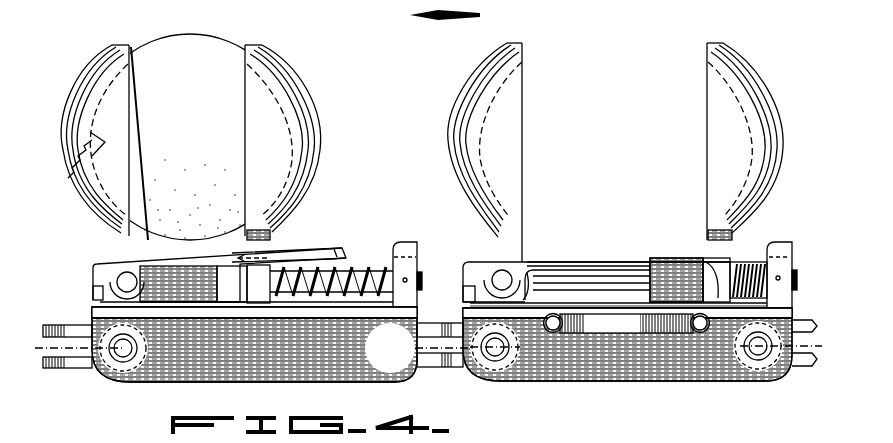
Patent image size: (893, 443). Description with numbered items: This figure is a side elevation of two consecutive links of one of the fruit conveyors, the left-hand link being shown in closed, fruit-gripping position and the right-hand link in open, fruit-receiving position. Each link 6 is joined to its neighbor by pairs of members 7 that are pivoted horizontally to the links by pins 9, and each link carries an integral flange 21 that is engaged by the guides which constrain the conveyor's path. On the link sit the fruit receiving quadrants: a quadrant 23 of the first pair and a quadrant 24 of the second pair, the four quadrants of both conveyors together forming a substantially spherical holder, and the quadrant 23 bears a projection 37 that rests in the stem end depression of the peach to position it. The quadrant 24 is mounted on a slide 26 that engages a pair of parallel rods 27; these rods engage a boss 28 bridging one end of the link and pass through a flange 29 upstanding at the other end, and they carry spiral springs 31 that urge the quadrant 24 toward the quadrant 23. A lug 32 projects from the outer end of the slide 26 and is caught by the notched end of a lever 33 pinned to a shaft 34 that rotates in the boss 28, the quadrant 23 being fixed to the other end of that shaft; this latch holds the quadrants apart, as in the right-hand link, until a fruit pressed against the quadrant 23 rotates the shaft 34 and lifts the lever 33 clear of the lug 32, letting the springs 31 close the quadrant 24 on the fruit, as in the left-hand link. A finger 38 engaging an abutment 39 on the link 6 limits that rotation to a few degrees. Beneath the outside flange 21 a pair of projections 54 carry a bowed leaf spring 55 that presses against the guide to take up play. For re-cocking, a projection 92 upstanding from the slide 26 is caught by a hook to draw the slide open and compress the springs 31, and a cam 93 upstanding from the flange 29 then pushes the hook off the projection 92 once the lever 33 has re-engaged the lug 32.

The link 6 is at (315, 370).
The member 7 is at (443, 369).
The pin 9 is at (122, 356).
The flange 21 is at (462, 306).
The quadrant 23 is at (104, 202).
The quadrant 24 is at (283, 212).
The slide 26 is at (223, 292).
The rod 27 is at (373, 266).
The boss 28 is at (538, 290).
The flange 29 is at (413, 262).
The spiral spring 31 is at (349, 264).
The lug 32 is at (261, 290).
The lever 33 is at (323, 256).
The shaft 34 is at (120, 275).
The projection 37 is at (68, 178).
The finger 38 is at (97, 272).
The abutment 39 is at (95, 293).
The projection 54 is at (555, 334).
The leaf spring 55 is at (614, 328).
The projection 92 is at (271, 243).
The cam 93 is at (412, 250).